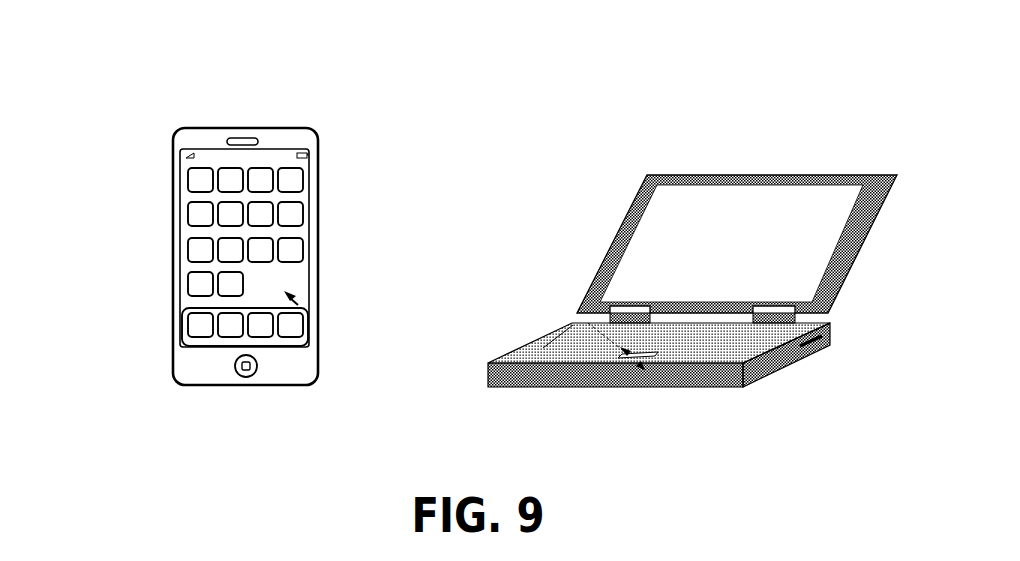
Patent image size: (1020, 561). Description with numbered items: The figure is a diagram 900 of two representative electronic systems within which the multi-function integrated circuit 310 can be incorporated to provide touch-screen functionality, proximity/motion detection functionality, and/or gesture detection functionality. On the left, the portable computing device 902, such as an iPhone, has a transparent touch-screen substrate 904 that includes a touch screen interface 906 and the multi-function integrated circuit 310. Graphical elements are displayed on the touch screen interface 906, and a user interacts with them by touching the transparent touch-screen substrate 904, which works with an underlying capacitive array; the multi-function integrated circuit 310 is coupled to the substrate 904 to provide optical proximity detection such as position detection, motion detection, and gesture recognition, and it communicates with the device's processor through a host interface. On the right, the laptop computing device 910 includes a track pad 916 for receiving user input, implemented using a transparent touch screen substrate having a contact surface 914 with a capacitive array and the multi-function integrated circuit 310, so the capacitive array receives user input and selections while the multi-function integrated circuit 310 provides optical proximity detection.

The diagram 900 is at (112, 66).
The portable computing device 902 is at (173, 149).
The transparent touch-screen substrate 904 is at (180, 228).
The touch screen interface 906 is at (188, 203).
The multi-function integrated circuit 310 is at (294, 296).
The laptop computing device 910 is at (645, 190).
The contact surface 914 is at (584, 319).
The track pad 916 is at (593, 285).